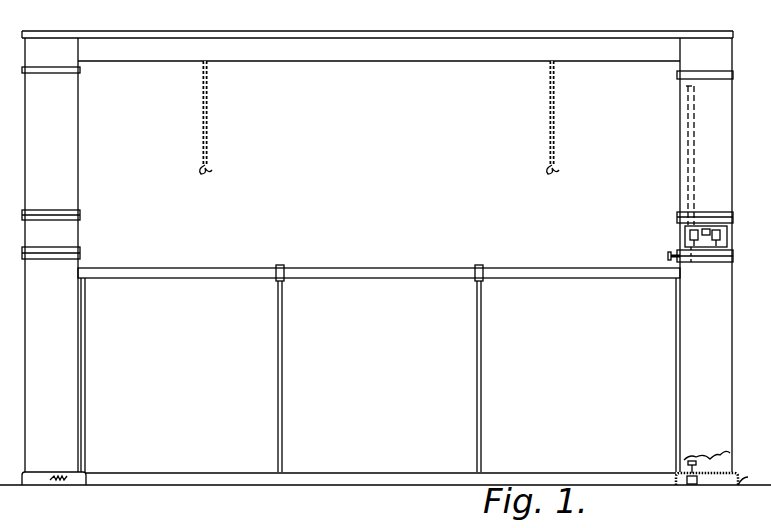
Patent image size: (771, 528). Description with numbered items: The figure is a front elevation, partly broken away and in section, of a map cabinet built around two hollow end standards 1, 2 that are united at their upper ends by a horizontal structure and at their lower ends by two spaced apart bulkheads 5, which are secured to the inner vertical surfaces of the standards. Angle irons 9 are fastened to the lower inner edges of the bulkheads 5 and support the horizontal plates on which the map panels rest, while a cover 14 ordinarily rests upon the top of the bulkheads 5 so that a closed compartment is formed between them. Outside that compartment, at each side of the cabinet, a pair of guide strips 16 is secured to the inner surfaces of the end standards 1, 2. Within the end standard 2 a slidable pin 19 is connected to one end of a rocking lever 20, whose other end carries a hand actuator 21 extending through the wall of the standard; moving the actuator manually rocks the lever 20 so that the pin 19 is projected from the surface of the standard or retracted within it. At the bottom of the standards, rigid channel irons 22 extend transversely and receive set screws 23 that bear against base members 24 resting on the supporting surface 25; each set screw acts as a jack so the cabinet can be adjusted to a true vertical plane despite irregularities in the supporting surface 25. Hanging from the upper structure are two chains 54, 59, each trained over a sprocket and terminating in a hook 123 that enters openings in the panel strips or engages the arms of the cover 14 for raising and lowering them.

The end standard 1 is at (66, 194).
The end standard 2 is at (722, 191).
The bulkhead 5 is at (205, 282).
The angle iron 9 is at (333, 56).
The cover 14 is at (372, 272).
The guide strip 16 is at (701, 468).
The slidable pin 19 is at (686, 87).
The rocking lever 20 is at (688, 138).
The hand actuator 21 is at (668, 255).
The channel iron 22 is at (718, 475).
The set screw 23 is at (684, 462).
The base member 24 is at (50, 481).
The supporting surface 25 is at (742, 491).
The chain 54 is at (209, 134).
The chain 59 is at (546, 118).
The hook 123 is at (198, 175).